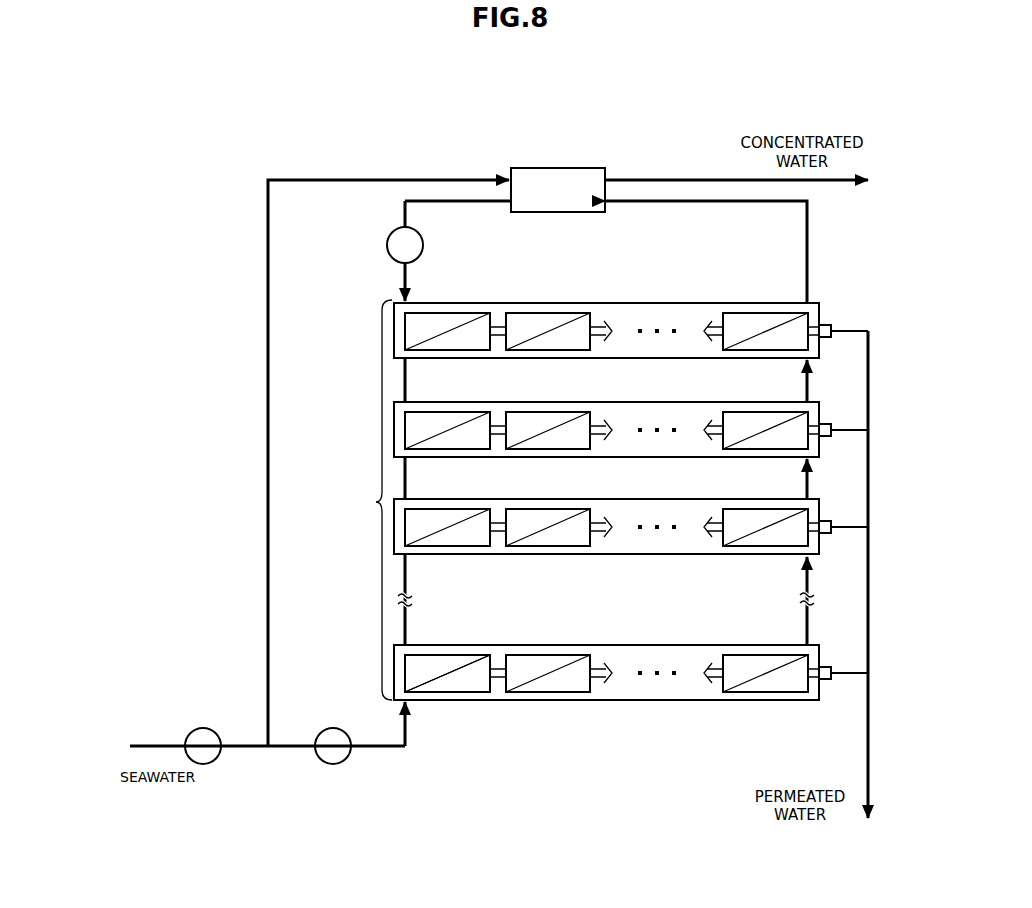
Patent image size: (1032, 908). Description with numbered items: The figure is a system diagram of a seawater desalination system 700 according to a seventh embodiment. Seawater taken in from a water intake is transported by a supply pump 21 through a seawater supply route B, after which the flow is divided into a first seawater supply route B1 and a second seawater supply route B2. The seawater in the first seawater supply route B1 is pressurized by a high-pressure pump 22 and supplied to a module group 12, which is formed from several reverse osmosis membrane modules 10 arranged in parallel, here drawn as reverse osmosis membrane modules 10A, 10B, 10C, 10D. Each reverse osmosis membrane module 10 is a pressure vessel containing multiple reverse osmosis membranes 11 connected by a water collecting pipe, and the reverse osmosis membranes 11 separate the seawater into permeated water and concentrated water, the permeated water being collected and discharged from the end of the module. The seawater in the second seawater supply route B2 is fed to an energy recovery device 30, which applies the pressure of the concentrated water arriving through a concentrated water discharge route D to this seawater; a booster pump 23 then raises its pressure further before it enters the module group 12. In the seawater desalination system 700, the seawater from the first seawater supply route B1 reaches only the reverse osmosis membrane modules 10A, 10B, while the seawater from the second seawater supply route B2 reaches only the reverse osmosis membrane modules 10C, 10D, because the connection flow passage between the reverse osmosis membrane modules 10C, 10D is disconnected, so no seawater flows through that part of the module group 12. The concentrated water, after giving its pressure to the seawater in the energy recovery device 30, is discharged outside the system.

The seawater desalination system 700 is at (511, 154).
The energy recovery device 30 is at (560, 168).
The booster pump 23 is at (423, 245).
The supply pump 21 is at (213, 761).
The high-pressure pump 22 is at (326, 763).
The module group 12 is at (364, 500).
The reverse osmosis membrane module 10 is at (450, 710).
The reverse osmosis membrane 11 is at (480, 690).
The reverse osmosis membrane module 10A is at (620, 644).
The reverse osmosis membrane module 10B is at (620, 499).
The reverse osmosis membrane module 10C is at (620, 402).
The reverse osmosis membrane module 10D is at (620, 303).
The seawater supply route B is at (157, 745).
The first seawater supply route B1 is at (386, 750).
The second seawater supply route B2 is at (268, 310).
The concentrated water discharge route D is at (807, 232).